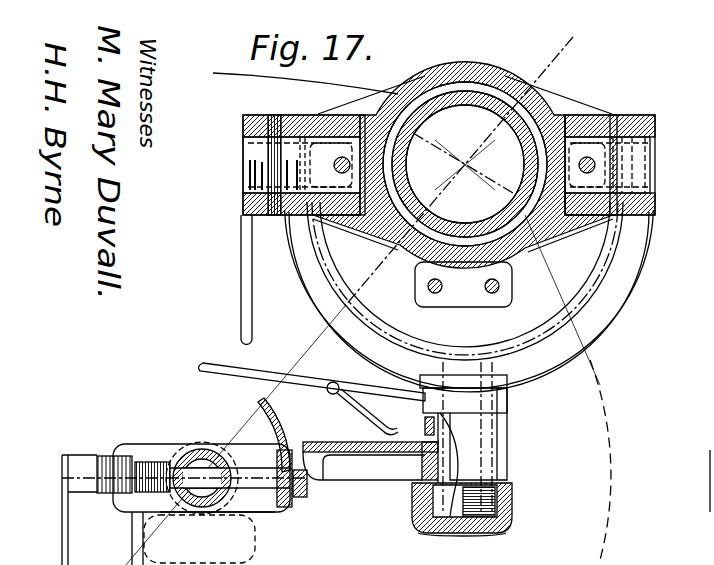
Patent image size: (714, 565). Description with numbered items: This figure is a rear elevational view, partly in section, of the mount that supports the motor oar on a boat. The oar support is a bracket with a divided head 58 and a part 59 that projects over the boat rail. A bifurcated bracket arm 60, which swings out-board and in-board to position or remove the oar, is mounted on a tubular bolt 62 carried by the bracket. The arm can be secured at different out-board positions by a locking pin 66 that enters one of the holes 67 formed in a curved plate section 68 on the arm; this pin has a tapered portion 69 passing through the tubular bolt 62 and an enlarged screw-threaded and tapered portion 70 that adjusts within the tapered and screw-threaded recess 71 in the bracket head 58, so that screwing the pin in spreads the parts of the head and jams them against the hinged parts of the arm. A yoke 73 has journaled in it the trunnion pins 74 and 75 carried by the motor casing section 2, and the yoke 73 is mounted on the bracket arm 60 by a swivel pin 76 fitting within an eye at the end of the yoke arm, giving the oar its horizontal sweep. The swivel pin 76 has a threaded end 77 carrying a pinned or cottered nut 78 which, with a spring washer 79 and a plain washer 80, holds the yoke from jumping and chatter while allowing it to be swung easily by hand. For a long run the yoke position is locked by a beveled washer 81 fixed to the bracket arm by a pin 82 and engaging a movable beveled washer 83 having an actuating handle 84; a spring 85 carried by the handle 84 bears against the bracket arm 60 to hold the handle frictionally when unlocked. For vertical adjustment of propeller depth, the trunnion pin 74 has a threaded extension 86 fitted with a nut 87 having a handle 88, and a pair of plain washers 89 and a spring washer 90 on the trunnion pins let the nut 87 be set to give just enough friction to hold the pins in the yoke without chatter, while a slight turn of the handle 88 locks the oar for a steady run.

The motor casing section 2 is at (550, 112).
The divided head 58 is at (197, 443).
The part 59 is at (257, 502).
The bifurcated bracket arm 60 is at (357, 470).
The tubular bolt 62 is at (204, 522).
The locking pin 66 is at (245, 478).
The holes 67 is at (300, 440).
The curved plate section 68 is at (235, 435).
The tapered portion 69 is at (205, 462).
The enlarged screw-threaded and tapered portion 70 is at (103, 502).
The tapered and screw-threaded recess 71 is at (150, 462).
The yoke 73 is at (602, 308).
The trunnion pin 74 is at (335, 137).
The trunnion pin 75 is at (640, 170).
The swivel pin 76 is at (453, 458).
The threaded end 77 is at (447, 533).
The nut 78 is at (513, 505).
The spring washer 79 is at (495, 490).
The plain washer 80 is at (505, 385).
The beveled washer 81 is at (503, 430).
The pin 82 is at (425, 420).
The movable beveled washer 83 is at (490, 380).
The actuating handle 84 is at (215, 365).
The spring 85 is at (370, 413).
The threaded extension 86 is at (243, 150).
The nut 87 is at (262, 115).
The handle 88 is at (241, 258).
The plain washers 89 is at (333, 168).
The spring washer 90 is at (275, 115).